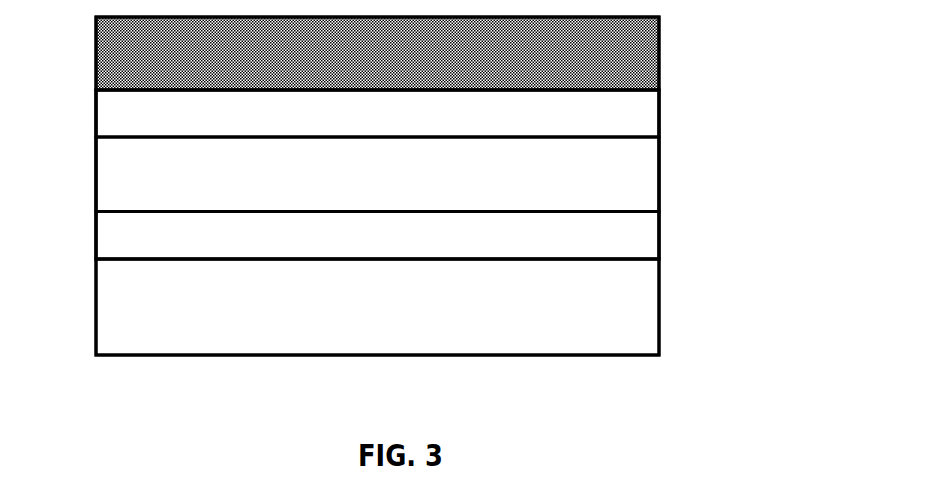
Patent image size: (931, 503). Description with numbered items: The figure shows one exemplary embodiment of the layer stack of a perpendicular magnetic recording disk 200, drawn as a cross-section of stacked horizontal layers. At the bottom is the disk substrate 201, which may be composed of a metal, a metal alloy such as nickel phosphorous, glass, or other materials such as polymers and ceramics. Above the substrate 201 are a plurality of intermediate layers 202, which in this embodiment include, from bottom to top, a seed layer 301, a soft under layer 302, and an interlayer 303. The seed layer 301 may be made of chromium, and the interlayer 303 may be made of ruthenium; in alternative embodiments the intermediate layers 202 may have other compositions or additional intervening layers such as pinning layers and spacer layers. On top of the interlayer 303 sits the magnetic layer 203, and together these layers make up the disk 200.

The perpendicular magnetic recording disk 200 is at (87, 355).
The disk substrate 201 is at (442, 318).
The intermediate layers 202 is at (670, 255).
The magnetic layer 203 is at (472, 66).
The seed layer 301 is at (452, 246).
The soft under layer 302 is at (480, 186).
The interlayer 303 is at (442, 126).